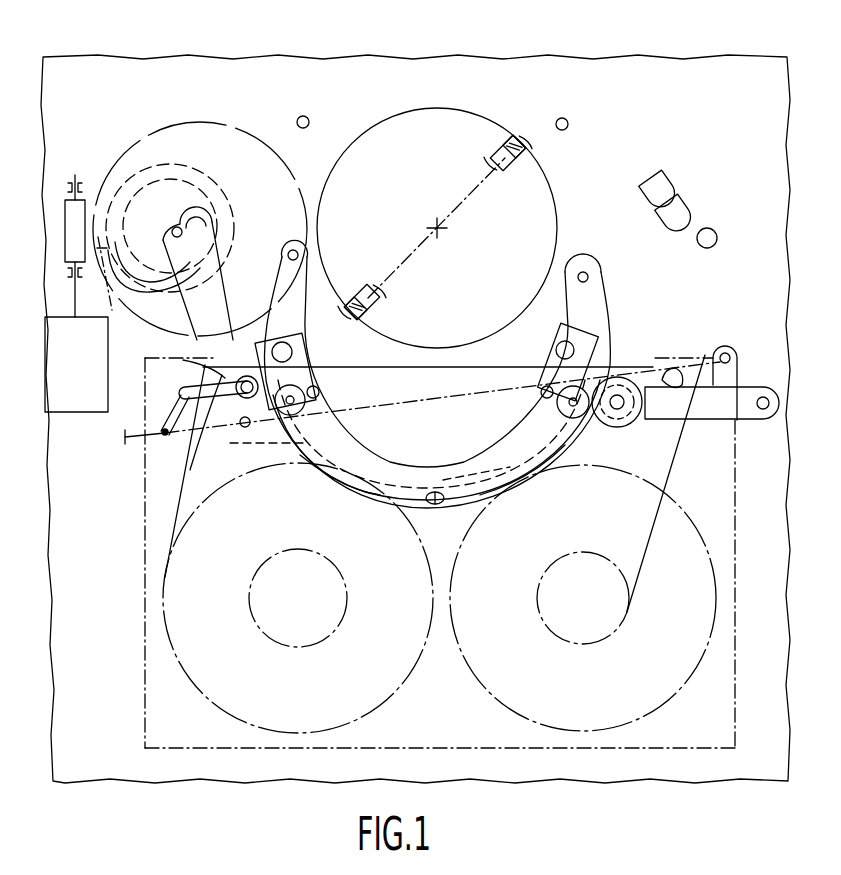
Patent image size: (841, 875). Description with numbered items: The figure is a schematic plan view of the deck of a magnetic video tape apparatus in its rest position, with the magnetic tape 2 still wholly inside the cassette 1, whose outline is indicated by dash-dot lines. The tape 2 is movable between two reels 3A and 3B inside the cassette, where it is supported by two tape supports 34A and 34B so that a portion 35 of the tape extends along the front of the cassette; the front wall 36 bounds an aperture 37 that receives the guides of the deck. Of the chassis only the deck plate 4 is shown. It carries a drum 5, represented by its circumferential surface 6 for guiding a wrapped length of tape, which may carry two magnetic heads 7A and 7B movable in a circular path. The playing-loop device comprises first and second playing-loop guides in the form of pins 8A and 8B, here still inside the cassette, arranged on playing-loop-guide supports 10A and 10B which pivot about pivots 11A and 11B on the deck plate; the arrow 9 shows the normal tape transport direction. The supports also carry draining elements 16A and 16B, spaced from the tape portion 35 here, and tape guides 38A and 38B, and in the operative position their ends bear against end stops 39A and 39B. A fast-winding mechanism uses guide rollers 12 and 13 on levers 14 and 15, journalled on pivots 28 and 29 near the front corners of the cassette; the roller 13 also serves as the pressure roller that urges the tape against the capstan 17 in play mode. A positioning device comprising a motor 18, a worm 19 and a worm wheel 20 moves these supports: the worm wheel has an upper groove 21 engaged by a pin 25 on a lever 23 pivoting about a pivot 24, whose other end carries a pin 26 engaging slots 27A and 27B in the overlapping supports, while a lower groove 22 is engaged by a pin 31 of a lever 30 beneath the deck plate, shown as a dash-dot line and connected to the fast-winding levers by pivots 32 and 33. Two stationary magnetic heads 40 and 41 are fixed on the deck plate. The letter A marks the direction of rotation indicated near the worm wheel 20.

The cassette 1 is at (162, 725).
The magnetic tape 2 is at (178, 500).
The reel 3A is at (248, 722).
The reel 3B is at (604, 617).
The deck plate 4 is at (665, 72).
The drum 5 is at (378, 150).
The circumferential surface 6 is at (470, 110).
The magnetic head 7A is at (380, 302).
The magnetic head 7B is at (510, 172).
The playing-loop guide 8A is at (319, 391).
The playing-loop guide 8B is at (541, 393).
The arrow 9 is at (172, 466).
The playing-loop-guide support 10A is at (596, 311).
The playing-loop-guide support 10B is at (295, 320).
The pivot 11A is at (590, 277).
The pivot 11B is at (290, 250).
The guide roller 12 is at (245, 400).
The guide roller 13 is at (622, 380).
The lever 14 is at (205, 420).
The lever 15 is at (700, 412).
The draining element 16A is at (292, 352).
The draining element 16B is at (556, 352).
The capstan 17 is at (712, 229).
The motor 18 is at (58, 414).
The worm 19 is at (66, 235).
The worm wheel 20 is at (228, 142).
The groove 21 is at (140, 272).
The groove 22 is at (137, 168).
The lever 23 is at (212, 300).
The pivot 24 is at (247, 428).
The pin 25 is at (174, 226).
The pin 26 is at (435, 505).
The slot 27A is at (377, 482).
The slot 27B is at (515, 470).
The pivot 28 is at (183, 391).
The pivot 29 is at (763, 397).
The lever 30 is at (125, 437).
The pin 31 is at (98, 265).
The pivot 32 is at (165, 436).
The pivot 33 is at (730, 352).
The tape support 34A is at (183, 360).
The tape support 34B is at (674, 372).
The portion of the magnetic tape 35 is at (430, 368).
The wall 36 is at (603, 448).
The aperture 37 is at (432, 416).
The tape guide 38A is at (335, 416).
The tape guide 38B is at (525, 425).
The end stop 39A is at (302, 116).
The end stop 39B is at (566, 119).
The stationary magnetic head 40 is at (655, 182).
The stationary magnetic head 41 is at (676, 203).
The direction of rotation A is at (200, 106).